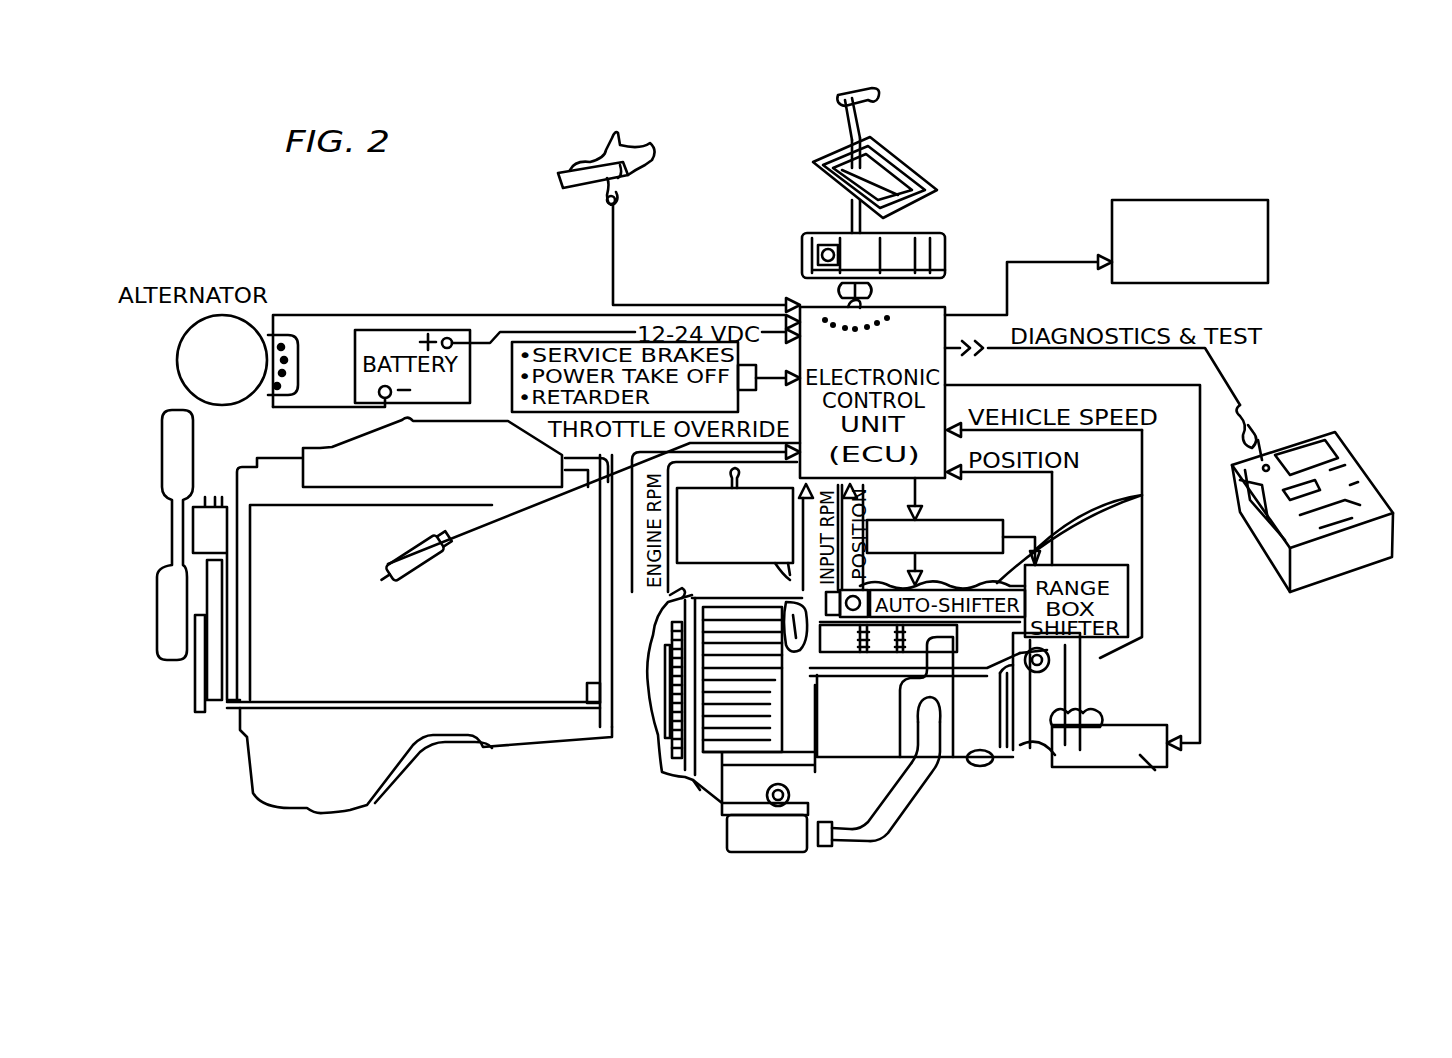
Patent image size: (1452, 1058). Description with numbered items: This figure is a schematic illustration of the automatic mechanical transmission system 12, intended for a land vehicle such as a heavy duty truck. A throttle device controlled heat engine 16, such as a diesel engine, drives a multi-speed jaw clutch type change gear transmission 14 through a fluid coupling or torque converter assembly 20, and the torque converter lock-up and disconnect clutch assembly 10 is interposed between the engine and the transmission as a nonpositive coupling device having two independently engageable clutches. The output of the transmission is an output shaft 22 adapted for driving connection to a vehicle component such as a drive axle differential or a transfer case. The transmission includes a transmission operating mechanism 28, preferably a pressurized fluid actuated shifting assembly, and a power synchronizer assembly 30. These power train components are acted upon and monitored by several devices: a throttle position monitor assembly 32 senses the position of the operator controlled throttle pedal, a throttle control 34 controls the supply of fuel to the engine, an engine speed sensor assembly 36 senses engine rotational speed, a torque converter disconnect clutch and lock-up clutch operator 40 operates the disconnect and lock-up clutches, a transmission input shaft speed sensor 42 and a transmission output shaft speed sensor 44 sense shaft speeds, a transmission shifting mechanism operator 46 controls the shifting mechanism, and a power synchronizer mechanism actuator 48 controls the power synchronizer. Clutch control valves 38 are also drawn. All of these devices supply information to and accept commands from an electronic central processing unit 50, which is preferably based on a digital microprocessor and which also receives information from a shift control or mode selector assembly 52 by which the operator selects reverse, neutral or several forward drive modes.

The torque converter lock-up and disconnect clutch assembly 10 is at (640, 752).
The automatic mechanical transmission system 12 is at (1043, 178).
The multi-speed jaw clutch type change gear transmission 14 is at (943, 772).
The throttle device controlled heat engine 16 is at (384, 611).
The fluid coupling or torque converter assembly 20 is at (688, 805).
The output shaft 22 is at (1092, 712).
The transmission operating mechanism 28 is at (1142, 495).
The power synchronizer assembly 30 is at (1165, 752).
The throttle position monitor assembly 32 is at (632, 232).
The throttle control 34 is at (375, 572).
The engine speed sensor assembly 36 is at (665, 612).
The clutch control valve 38 is at (732, 563).
The torque converter disconnect clutch and lock-up clutch operator 40 is at (773, 577).
The transmission input shaft speed sensor 42 is at (798, 642).
The transmission output shaft speed sensor 44 is at (1020, 745).
The transmission shifting mechanism operator 46 is at (975, 522).
The power synchronizer mechanism actuator 48 is at (1150, 767).
The electronic central processing unit (ECU) 50 is at (985, 258).
The shift control or mode selector assembly 52 is at (925, 155).